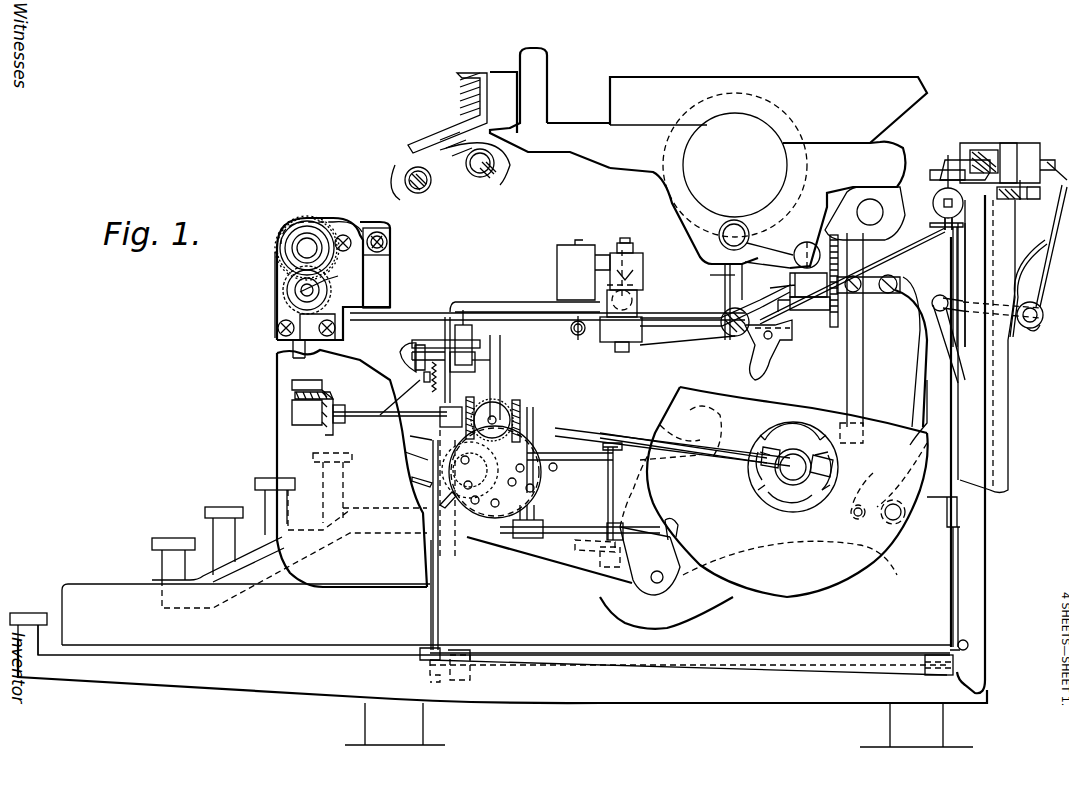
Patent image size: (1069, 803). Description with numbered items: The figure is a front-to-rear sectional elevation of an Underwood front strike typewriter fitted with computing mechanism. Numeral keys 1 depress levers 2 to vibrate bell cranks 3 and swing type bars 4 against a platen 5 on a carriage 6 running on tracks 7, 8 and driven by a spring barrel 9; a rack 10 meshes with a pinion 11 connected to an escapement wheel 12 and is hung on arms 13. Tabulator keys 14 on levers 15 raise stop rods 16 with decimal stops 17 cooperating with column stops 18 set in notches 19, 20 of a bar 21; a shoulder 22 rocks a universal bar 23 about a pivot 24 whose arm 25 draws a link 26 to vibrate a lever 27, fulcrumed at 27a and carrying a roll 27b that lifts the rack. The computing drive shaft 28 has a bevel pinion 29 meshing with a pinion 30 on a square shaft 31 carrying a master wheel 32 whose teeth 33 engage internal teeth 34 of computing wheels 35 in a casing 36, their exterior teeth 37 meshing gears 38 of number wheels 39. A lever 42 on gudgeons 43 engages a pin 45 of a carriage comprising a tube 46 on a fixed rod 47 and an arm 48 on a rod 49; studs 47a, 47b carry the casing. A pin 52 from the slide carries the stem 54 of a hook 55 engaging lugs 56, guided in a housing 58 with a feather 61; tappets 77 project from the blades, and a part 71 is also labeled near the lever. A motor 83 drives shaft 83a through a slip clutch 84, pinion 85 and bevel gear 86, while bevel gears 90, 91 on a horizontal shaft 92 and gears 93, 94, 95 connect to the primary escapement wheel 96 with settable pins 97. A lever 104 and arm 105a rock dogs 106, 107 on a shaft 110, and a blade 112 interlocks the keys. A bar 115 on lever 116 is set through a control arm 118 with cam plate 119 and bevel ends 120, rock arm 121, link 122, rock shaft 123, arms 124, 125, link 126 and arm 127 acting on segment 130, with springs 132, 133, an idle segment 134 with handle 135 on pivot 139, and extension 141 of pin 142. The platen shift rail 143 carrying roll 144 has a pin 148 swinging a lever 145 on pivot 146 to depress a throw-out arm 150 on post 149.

The numeral keys 1 is at (313, 456).
The levers 2 is at (605, 590).
The bell cranks 3 is at (652, 548).
The type bars 4 is at (400, 410).
The platen 5 is at (775, 135).
The carriage 6 is at (768, 110).
The track 7 is at (470, 128).
The track 8 is at (865, 213).
The spring barrel 9 is at (851, 338).
The rack 10 is at (802, 246).
The pinion 11 is at (795, 297).
The escapement wheel 12 is at (830, 315).
The arms 13 is at (750, 238).
The tabulator keys 14 is at (25, 622).
The levers 15 is at (502, 665).
The stop rods 16 is at (983, 652).
The decimal stops 17 is at (992, 263).
The column stops 18 is at (1000, 163).
The notches 19 is at (985, 150).
The notches 20 is at (995, 195).
The bar 21 is at (1015, 145).
The shoulder 22 is at (952, 535).
The universal bar 23 is at (945, 503).
The pivot 24 is at (892, 524).
The arm 25 is at (855, 522).
The link 26 is at (870, 476).
The lever 27 is at (883, 293).
The fulcrum 27a is at (860, 278).
The roll 27b is at (778, 305).
The drive shaft 28 is at (283, 351).
The bevel pinion 29 is at (282, 314).
The pinion 30 is at (323, 290).
The square shaft 31 is at (315, 292).
The master wheel 32 is at (292, 290).
The spurs or teeth 33 is at (295, 278).
The internal teeth 34 is at (340, 288).
The computing wheels 35 is at (280, 258).
The casing 36 is at (278, 330).
The exterior teeth 37 is at (275, 300).
The gears 38 is at (309, 222).
The number wheels 39 is at (340, 232).
The lever 42 is at (715, 318).
The gudgeons 43 is at (633, 275).
The pin 45 is at (388, 317).
The tube 46 is at (390, 243).
The fixed rod 47 is at (392, 260).
The rod or stud 47a is at (336, 330).
The rod or stud 47b is at (282, 342).
The arm 48 is at (392, 297).
The fixed horizontal rod 49 is at (356, 228).
The pin 52 is at (960, 240).
The stem 54 is at (933, 204).
The hook 55 is at (945, 165).
The lugs 56 is at (950, 158).
The tubular guide or housing 58 is at (958, 220).
The feather 61 is at (928, 225).
The pin 71 is at (577, 336).
The tappets 77 is at (1048, 158).
The motor 83 is at (679, 428).
The shaft 83a is at (745, 450).
The slip clutch 84 is at (795, 437).
The pinion 85 is at (775, 478).
The bevel gear 86 is at (773, 468).
The bevel gear 90 is at (290, 396).
The bevel gear 91 is at (320, 402).
The horizontal shaft 92 is at (380, 415).
The bevel gear 93 is at (492, 402).
The bevel gear 94 is at (512, 410).
The bevel gear 95 is at (522, 416).
The primary escapement wheel 96 is at (535, 490).
The settable pins 97 is at (452, 470).
The lever 104 is at (612, 478).
The arm 105a is at (630, 480).
The dog 106 is at (575, 545).
The dog 107 is at (518, 540).
The shaft 110 is at (668, 523).
The blade 112 is at (440, 535).
The bar 115 is at (440, 500).
The lever 116 is at (412, 479).
The control arm 118 is at (1058, 210).
The cam plate 119 is at (1058, 158).
The bevel ends 120 is at (1041, 190).
The rock arm 121 is at (938, 295).
The link 122 is at (950, 360).
The rock shaft 123 is at (830, 665).
The arm 124 is at (962, 670).
The second arm 125 is at (435, 677).
The link 126 is at (437, 618).
The arm 127 is at (540, 470).
The segment 130 is at (440, 426).
The spring 132 is at (445, 385).
The spring 133 is at (1013, 280).
The idle segment 134 is at (448, 312).
The handle 135 is at (455, 370).
The pivot 139 is at (428, 345).
The rearward extension 141 is at (483, 366).
The pin 142 is at (440, 380).
The platen shift rail 143 is at (722, 332).
The roll 144 is at (716, 301).
The lever 145 is at (665, 330).
The pivot 146 is at (640, 298).
The pin 148 is at (790, 330).
The post 149 is at (487, 354).
The throw-out arm 150 is at (470, 330).